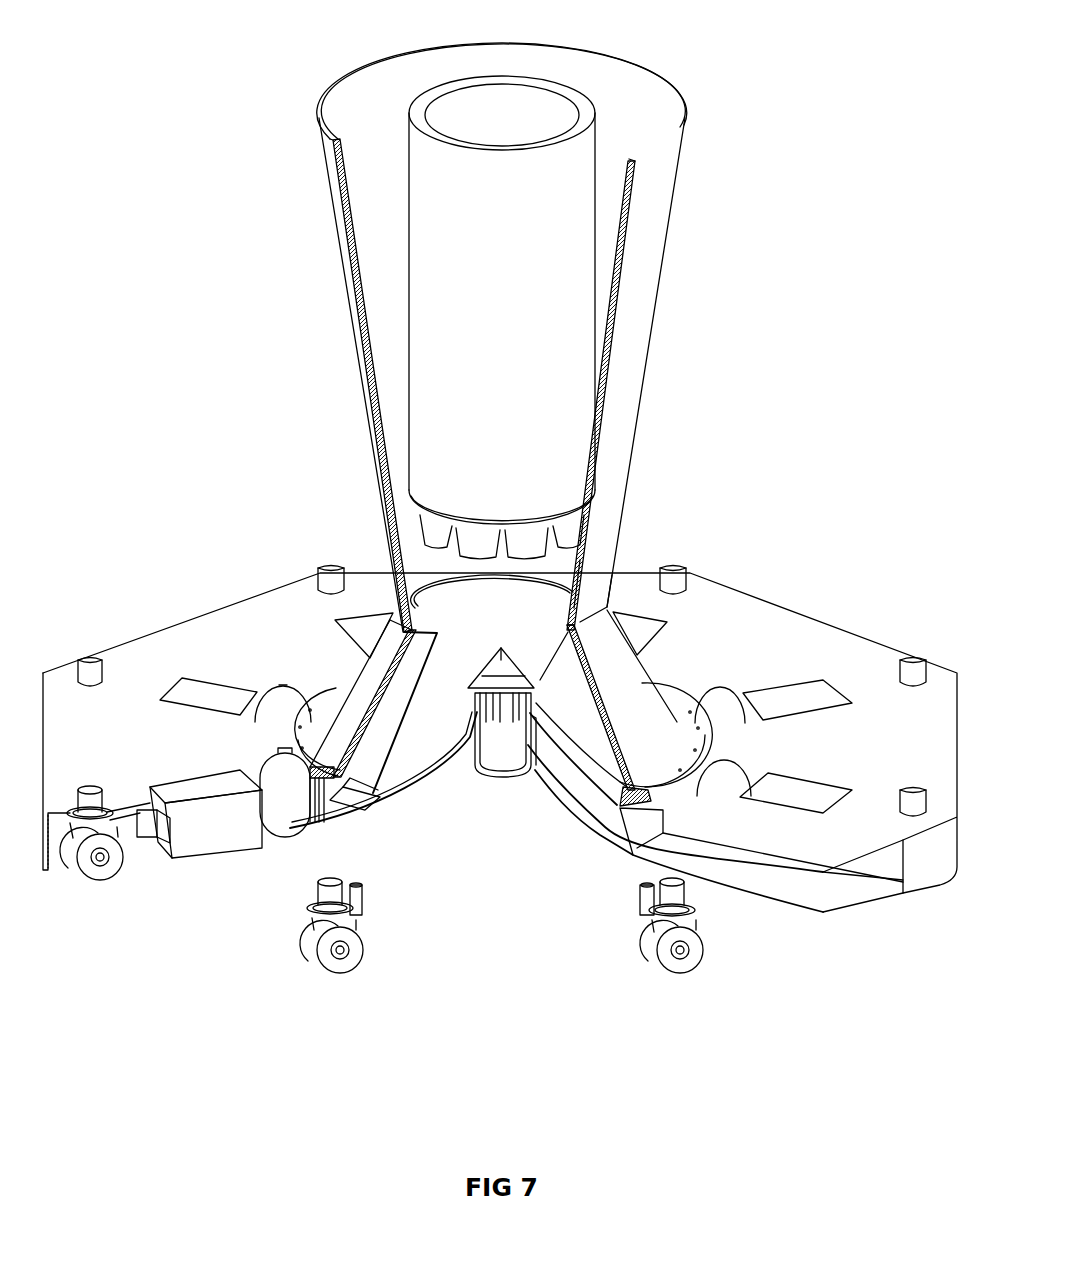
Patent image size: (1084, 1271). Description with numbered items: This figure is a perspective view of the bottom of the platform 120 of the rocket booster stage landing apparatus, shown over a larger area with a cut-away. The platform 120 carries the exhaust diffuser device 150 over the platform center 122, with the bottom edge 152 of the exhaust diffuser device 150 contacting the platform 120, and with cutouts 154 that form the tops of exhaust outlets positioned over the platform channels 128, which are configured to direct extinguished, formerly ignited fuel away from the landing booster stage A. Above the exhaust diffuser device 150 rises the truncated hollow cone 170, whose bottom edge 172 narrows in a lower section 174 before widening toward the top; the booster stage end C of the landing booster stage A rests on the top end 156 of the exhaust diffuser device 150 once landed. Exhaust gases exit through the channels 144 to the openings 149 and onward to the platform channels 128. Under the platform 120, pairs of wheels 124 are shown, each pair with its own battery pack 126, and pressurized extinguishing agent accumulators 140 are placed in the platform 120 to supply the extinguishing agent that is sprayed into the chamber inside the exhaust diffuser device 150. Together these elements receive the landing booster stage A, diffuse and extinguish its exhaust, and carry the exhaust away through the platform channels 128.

The truncated hollow cone 170 is at (643, 213).
The landing booster stage A is at (530, 337).
The booster stage end C is at (590, 490).
The top end of exhaust diffusing device 156 is at (578, 567).
The lower section of truncated hollow cone 174 is at (593, 607).
The exhaust diffuser device 150 is at (613, 682).
The bottom edge of truncated hollow cone 172 is at (680, 695).
The platform 120 is at (838, 657).
The channels 144 is at (420, 733).
The cutouts 154 is at (390, 815).
The openings 149 is at (357, 807).
The bottom edge of exhaust diffuser device 152 is at (347, 820).
The platform center 122 is at (540, 793).
The battery pack 126 is at (235, 833).
The pressurized extinguishing agent accumulators 140 is at (292, 808).
The wheels 124 is at (85, 870).
The platform channels 128 is at (707, 860).